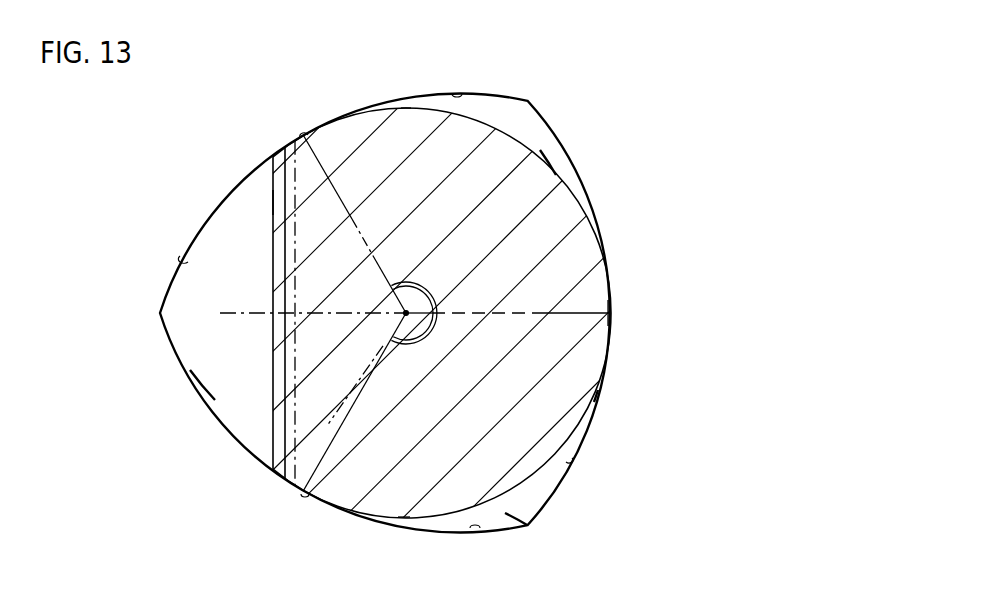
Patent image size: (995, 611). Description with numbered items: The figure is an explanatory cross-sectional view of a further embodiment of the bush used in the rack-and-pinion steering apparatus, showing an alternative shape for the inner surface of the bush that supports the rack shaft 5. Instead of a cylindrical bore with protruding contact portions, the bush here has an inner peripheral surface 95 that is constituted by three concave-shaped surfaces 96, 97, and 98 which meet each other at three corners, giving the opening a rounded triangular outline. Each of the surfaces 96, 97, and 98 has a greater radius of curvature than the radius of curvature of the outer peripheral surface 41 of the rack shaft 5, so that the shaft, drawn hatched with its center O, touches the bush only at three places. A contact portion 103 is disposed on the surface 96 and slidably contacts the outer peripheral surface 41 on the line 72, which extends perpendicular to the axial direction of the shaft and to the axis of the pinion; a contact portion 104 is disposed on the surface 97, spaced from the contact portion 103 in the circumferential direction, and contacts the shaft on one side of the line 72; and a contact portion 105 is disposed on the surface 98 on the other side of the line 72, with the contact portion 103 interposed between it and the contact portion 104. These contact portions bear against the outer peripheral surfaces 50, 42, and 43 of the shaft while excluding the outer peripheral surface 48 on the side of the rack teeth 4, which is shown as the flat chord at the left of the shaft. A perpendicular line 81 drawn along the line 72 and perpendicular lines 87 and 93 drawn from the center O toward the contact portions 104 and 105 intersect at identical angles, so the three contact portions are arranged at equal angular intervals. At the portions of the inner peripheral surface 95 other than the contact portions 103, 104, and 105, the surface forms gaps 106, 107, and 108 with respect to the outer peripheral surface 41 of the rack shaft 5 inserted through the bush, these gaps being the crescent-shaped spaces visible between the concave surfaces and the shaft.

The rack teeth 4 is at (277, 403).
The rack shaft 5 is at (567, 217).
The outer peripheral surface 41 is at (598, 231).
The outer peripheral surface 42 is at (405, 108).
The outer peripheral surface 43 is at (404, 517).
The outer peripheral surface 48 is at (273, 200).
The outer peripheral surface 50 is at (600, 396).
The line 72 is at (340, 312).
The perpendicular line 81 is at (528, 311).
The perpendicular line 87 is at (330, 180).
The perpendicular line 93 is at (340, 435).
The inner peripheral surface 95 is at (187, 262).
The concave-shaped surface 96 is at (568, 463).
The concave-shaped surface 97 is at (457, 95).
The concave-shaped surface 98 is at (475, 528).
The contact portion 103 is at (607, 318).
The contact portion 104 is at (309, 131).
The contact portion 105 is at (308, 505).
The gap 106 is at (217, 387).
The gap 107 is at (549, 146).
The gap 108 is at (530, 502).
The center O is at (404, 315).